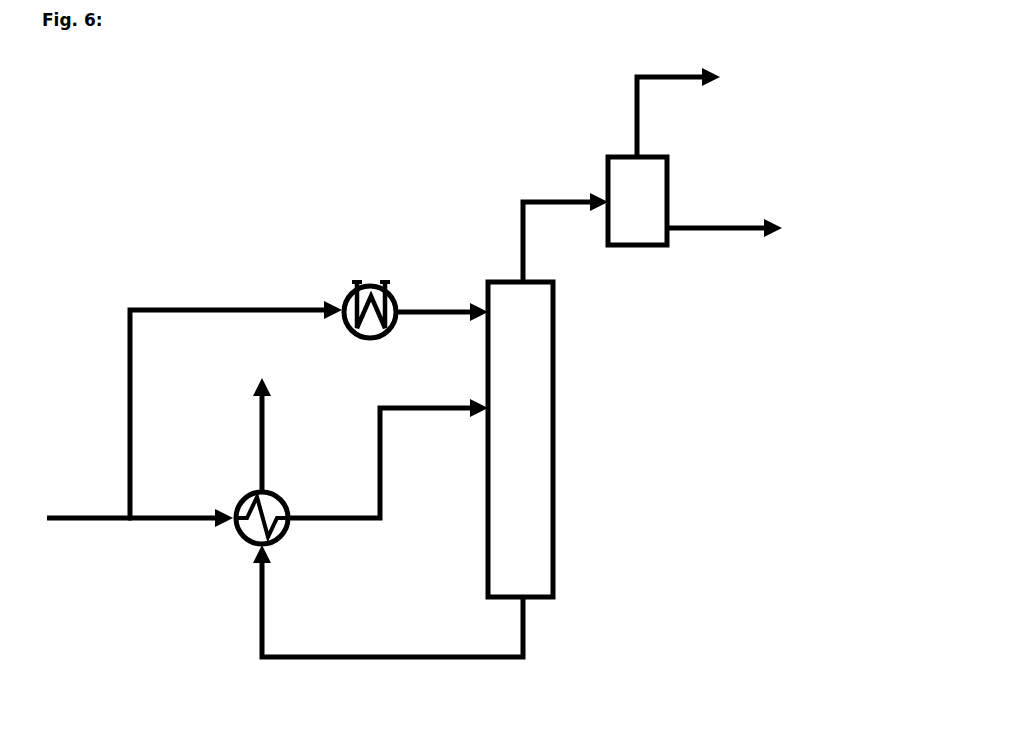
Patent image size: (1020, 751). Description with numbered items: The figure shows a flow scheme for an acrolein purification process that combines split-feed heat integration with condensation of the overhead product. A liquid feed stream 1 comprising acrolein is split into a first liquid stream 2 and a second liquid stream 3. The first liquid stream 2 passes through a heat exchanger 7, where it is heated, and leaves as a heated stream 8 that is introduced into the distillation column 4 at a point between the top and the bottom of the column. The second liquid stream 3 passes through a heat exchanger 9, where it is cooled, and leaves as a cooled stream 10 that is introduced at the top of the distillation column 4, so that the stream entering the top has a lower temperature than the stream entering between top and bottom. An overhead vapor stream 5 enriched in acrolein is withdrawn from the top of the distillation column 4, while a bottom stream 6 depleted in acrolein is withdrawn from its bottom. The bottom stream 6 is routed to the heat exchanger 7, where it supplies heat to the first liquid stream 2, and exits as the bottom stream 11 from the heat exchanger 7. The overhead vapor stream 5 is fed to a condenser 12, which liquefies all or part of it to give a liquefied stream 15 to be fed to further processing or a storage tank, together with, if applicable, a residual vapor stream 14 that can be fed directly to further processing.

The liquid feed stream 1 is at (89, 498).
The first liquid stream 2 is at (180, 503).
The second liquid stream 3 is at (220, 410).
The distillation column 4 is at (539, 439).
The overhead vapor stream 5 is at (565, 223).
The bottom stream 6 is at (388, 601).
The heat exchanger 7 is at (267, 504).
The heated stream 8 is at (388, 442).
The heat exchanger 9 is at (370, 284).
The cooled stream 10 is at (442, 294).
The bottom stream from heat exchanger 11 is at (245, 435).
The condenser 12 is at (659, 201).
The residual vapor stream 14 is at (702, 112).
The liquefied stream 15 is at (724, 246).